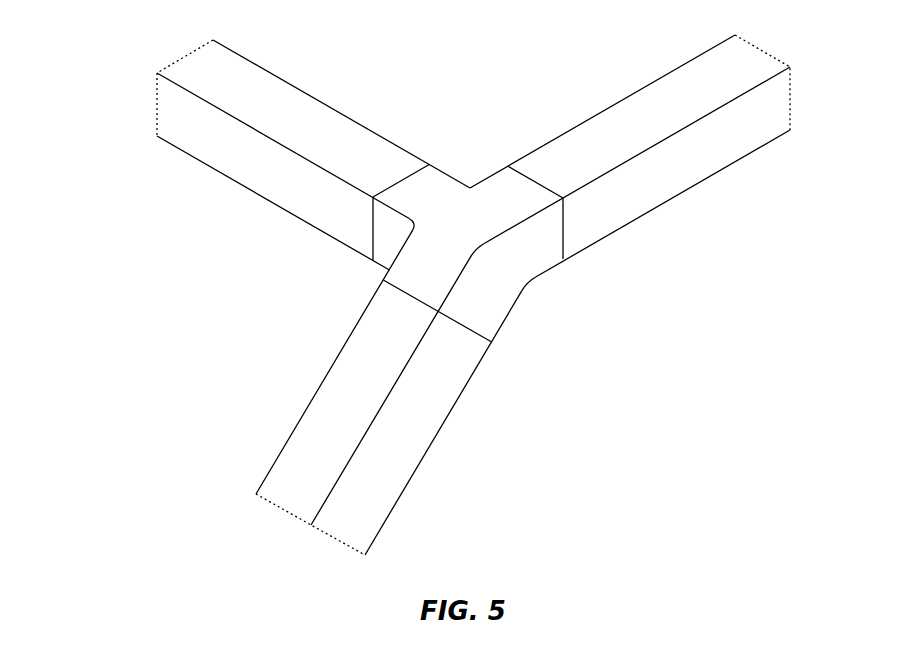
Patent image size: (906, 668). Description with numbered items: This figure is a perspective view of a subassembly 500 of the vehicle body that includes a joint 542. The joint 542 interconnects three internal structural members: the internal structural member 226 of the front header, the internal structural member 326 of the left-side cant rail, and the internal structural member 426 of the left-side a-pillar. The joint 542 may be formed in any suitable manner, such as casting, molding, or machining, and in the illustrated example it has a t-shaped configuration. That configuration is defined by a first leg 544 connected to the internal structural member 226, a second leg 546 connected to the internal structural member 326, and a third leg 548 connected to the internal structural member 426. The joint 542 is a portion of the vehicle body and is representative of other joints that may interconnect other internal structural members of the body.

The subassembly 500 is at (422, 295).
The internal structural member 226 is at (337, 111).
The internal structural member 326 is at (744, 158).
The internal structural member 426 is at (308, 405).
The joint 542 is at (528, 283).
The first leg 544 is at (403, 179).
The second leg 546 is at (529, 178).
The third leg 548 is at (478, 337).